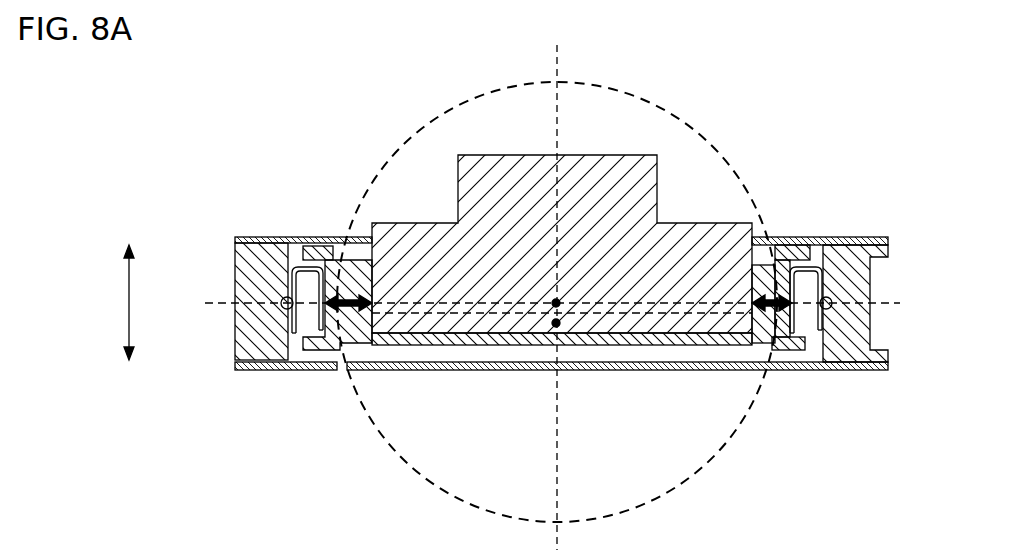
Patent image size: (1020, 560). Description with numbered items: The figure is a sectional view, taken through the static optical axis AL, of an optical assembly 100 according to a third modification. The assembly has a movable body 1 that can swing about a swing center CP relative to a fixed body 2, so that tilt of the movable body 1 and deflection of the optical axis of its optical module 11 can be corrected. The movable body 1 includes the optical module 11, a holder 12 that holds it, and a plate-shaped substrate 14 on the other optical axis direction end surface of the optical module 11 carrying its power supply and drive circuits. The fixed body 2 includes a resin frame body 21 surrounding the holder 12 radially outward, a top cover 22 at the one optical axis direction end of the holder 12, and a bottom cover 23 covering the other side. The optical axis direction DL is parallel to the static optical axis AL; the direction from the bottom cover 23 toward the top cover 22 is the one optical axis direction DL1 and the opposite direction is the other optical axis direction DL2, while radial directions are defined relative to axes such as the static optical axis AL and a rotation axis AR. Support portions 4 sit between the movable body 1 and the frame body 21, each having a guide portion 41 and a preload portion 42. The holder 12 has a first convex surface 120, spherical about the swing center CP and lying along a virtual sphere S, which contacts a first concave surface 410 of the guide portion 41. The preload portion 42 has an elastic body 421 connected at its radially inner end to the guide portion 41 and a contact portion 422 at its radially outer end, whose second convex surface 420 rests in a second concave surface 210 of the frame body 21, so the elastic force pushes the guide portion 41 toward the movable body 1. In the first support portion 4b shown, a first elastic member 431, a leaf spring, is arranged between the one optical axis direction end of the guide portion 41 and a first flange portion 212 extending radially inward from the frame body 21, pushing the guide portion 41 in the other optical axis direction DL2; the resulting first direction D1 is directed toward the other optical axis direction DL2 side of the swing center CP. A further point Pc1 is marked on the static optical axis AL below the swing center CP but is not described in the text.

The optical assembly 100 is at (272, 97).
The movable body 1 is at (432, 210).
The optical module 11 is at (505, 160).
The holder 12 is at (352, 262).
The substrate 14 is at (637, 347).
The fixed body 2 is at (521, 288).
The frame body 21 is at (240, 283).
The top cover 22 is at (280, 240).
The bottom cover 23 is at (245, 367).
The first flange portion 212 is at (261, 222).
The support portion 4 is at (294, 346).
The first support portion 4b is at (822, 250).
The guide portion 41 is at (758, 264).
The preload portion 42 is at (826, 182).
The first concave surface 410 is at (712, 340).
The first elastic member 431 is at (790, 240).
The elastic body 421 is at (803, 240).
The contact portion 422 is at (856, 240).
The second convex surface 420 is at (862, 352).
The first convex surface 120 is at (822, 309).
The second concave surface 210 is at (818, 351).
The first direction D1 is at (325, 345).
The virtual sphere S is at (392, 443).
The swing center CP is at (561, 298).
The center of gravity Pc1 is at (554, 326).
The static optical axis AL is at (557, 62).
The rotation axis AR is at (572, 303).
The optical axis direction DL is at (112, 302).
The one optical axis direction DL1 is at (132, 231).
The other optical axis direction DL2 is at (132, 378).